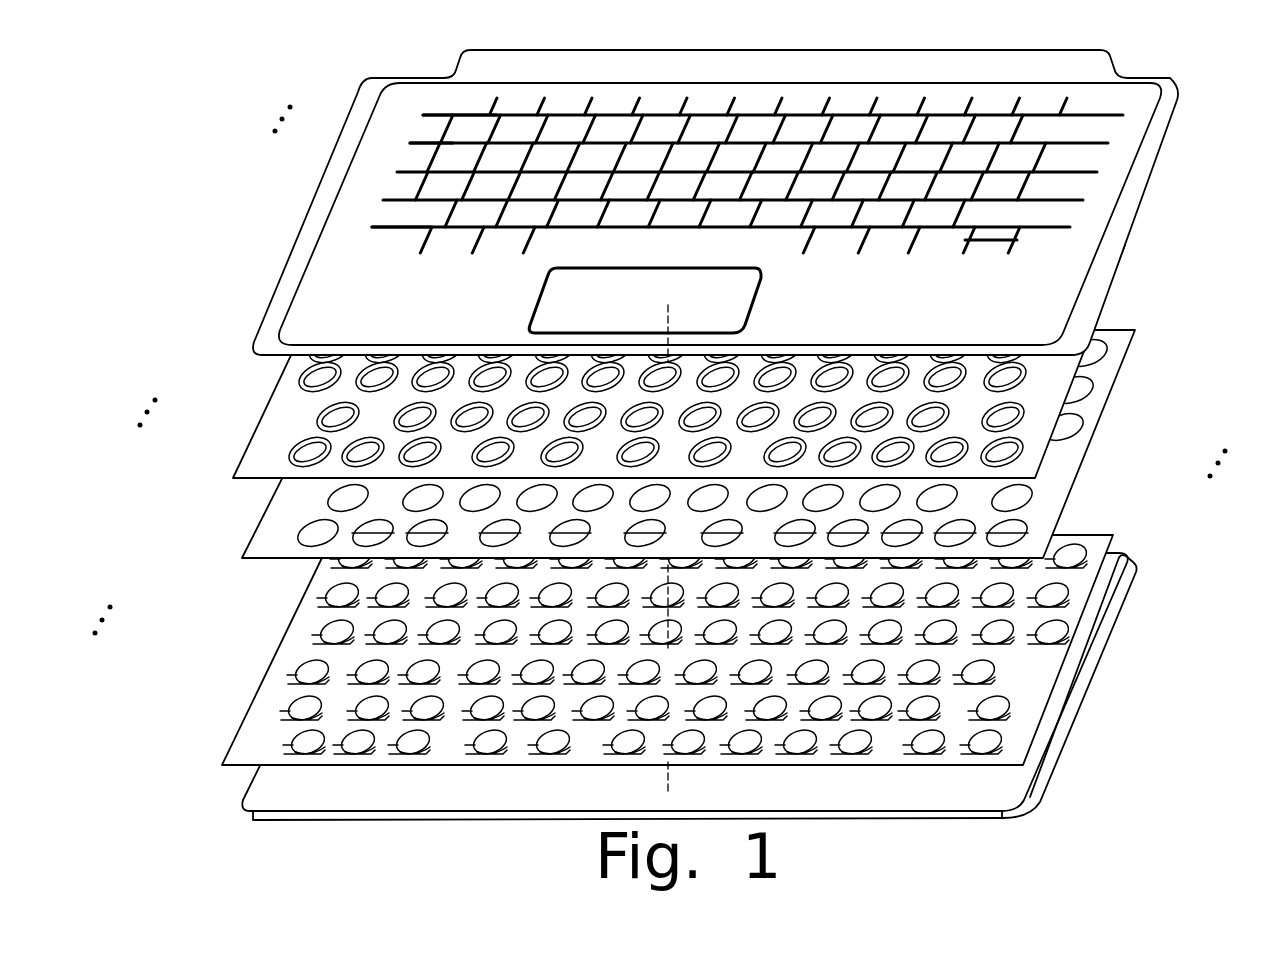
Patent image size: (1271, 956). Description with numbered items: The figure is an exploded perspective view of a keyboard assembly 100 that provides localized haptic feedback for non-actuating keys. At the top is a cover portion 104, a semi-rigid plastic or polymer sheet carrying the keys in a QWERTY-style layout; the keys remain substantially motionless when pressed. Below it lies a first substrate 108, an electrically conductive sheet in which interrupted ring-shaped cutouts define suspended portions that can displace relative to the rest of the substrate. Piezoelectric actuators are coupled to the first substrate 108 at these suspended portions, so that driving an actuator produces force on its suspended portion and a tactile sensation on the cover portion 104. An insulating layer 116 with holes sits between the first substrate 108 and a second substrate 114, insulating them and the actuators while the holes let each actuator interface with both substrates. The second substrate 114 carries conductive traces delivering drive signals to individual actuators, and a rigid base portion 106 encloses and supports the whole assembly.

The keyboard assembly 100 is at (196, 76).
The cover portion 104 is at (732, 191).
The base portion 106 is at (1003, 795).
The first substrate 108 is at (661, 361).
The second substrate 114 is at (622, 650).
The insulating layer 116 is at (756, 442).